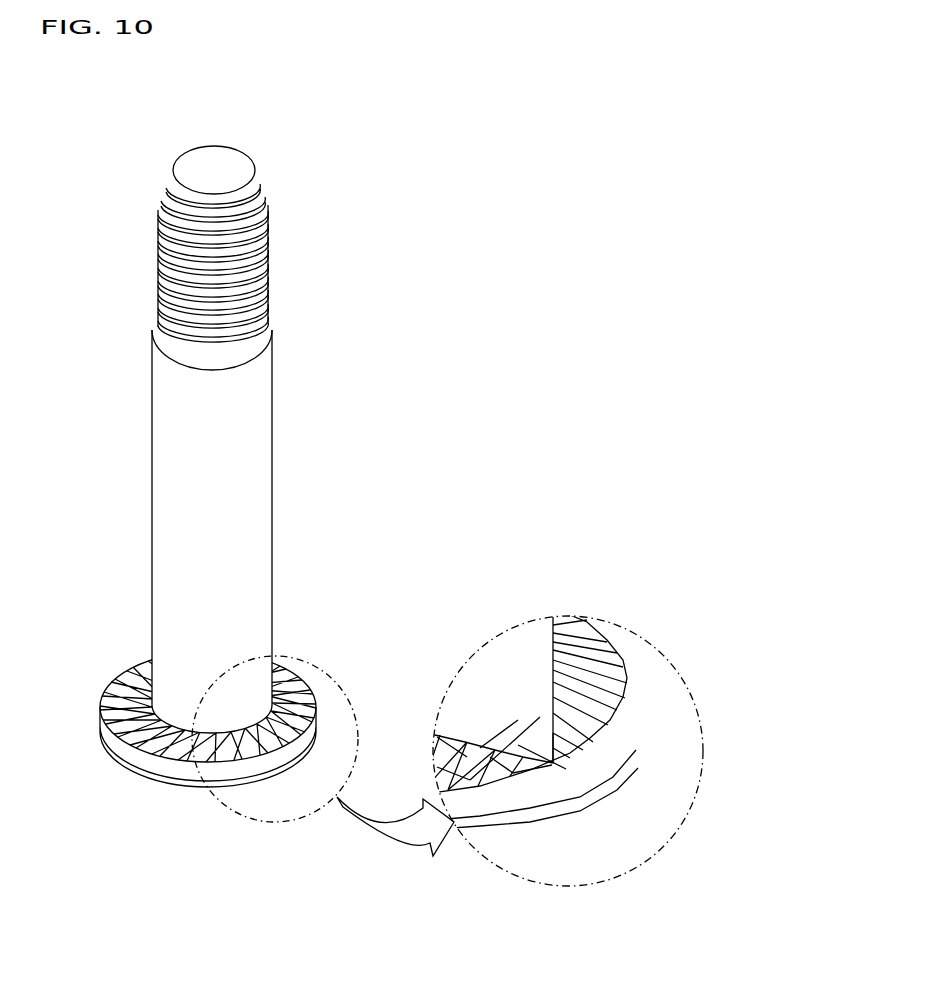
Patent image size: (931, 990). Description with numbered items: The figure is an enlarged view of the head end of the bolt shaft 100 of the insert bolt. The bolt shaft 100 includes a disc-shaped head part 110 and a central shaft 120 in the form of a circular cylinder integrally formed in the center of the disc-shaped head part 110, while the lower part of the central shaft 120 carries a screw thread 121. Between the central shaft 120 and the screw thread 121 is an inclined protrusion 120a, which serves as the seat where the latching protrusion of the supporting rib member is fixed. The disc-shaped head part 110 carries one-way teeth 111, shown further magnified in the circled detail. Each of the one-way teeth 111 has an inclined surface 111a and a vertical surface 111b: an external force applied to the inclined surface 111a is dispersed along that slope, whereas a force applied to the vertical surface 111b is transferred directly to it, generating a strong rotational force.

The bolt shaft 100 is at (444, 488).
The disc-shaped head part 110 is at (632, 690).
The one-way teeth 111 is at (611, 774).
The inclined surface 111a is at (540, 770).
The vertical surface 111b is at (567, 767).
The central shaft 120 is at (241, 522).
The inclined protrusion 120a is at (270, 345).
The screw thread 121 is at (262, 276).